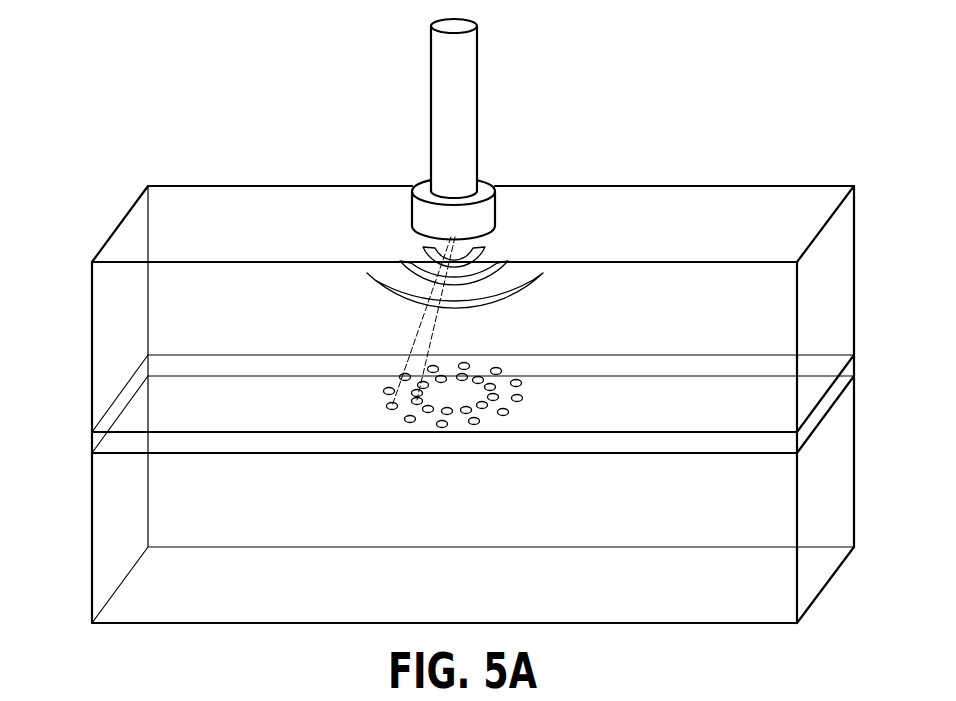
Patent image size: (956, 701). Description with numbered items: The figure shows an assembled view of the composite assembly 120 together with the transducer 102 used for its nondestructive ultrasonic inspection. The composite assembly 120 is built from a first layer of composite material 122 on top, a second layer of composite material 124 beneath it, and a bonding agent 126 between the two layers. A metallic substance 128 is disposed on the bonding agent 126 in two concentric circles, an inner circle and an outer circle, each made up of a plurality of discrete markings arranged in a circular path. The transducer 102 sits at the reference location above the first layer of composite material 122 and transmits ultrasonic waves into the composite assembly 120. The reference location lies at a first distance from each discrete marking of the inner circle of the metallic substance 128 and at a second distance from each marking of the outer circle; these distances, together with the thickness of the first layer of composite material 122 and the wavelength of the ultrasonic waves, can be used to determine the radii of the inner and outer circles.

The composite assembly 120 is at (111, 70).
The transducer 102 is at (418, 219).
The first layer of composite material 122 is at (92, 305).
The second layer of composite material 124 is at (92, 573).
The bonding agent 126 is at (92, 445).
The metallic substance 128 is at (388, 359).